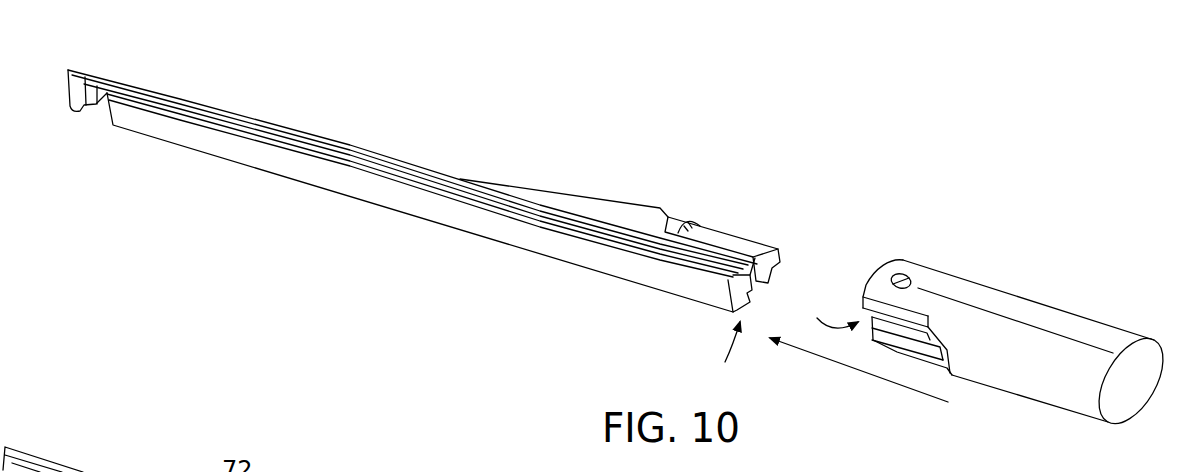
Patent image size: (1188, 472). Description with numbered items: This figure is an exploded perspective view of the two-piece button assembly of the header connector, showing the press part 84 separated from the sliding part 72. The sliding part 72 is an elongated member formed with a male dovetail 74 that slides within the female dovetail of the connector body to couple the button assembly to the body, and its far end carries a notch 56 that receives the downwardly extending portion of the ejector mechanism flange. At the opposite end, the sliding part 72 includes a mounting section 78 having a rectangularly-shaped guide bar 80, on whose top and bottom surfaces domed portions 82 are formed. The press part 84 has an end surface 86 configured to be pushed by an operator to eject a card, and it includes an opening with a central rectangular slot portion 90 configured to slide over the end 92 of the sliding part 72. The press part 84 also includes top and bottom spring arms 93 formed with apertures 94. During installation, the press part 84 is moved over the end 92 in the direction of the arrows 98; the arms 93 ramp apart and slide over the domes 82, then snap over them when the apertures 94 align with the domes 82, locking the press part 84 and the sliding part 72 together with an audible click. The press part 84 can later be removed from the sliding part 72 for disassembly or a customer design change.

The notch 56 is at (114, 98).
The sliding part 72 is at (305, 137).
The male dovetail 74 is at (655, 273).
The mounting section 78 is at (615, 218).
The guide bar 80 is at (742, 243).
The domed portions 82 is at (695, 218).
The press part 84 is at (1072, 296).
The end surface 86 is at (1130, 385).
The central rectangular slot portion 90 is at (825, 309).
The end of sliding part 92 is at (723, 357).
The spring arms 93 is at (893, 267).
The apertures 94 is at (900, 277).
The arrows 98 is at (838, 362).